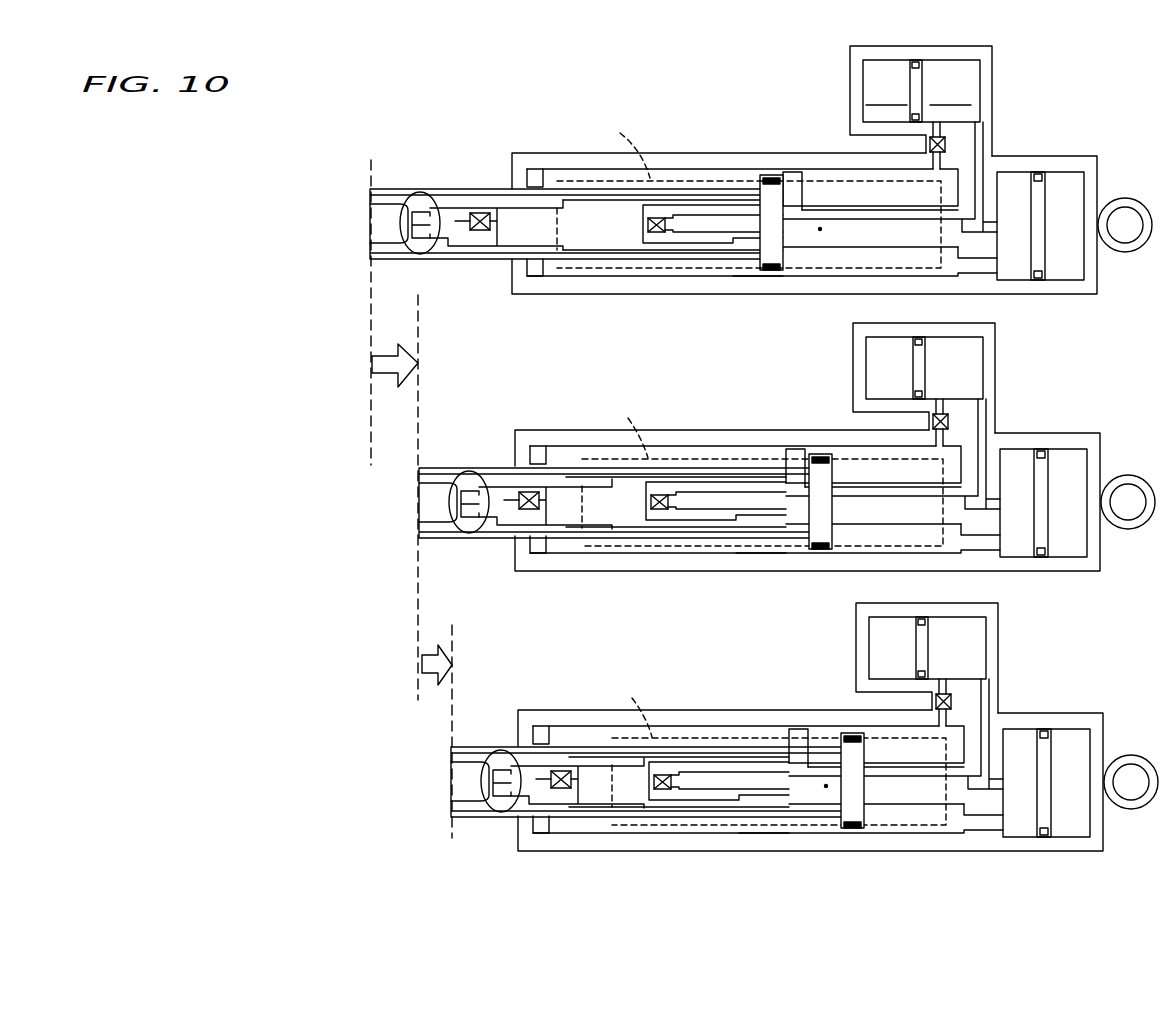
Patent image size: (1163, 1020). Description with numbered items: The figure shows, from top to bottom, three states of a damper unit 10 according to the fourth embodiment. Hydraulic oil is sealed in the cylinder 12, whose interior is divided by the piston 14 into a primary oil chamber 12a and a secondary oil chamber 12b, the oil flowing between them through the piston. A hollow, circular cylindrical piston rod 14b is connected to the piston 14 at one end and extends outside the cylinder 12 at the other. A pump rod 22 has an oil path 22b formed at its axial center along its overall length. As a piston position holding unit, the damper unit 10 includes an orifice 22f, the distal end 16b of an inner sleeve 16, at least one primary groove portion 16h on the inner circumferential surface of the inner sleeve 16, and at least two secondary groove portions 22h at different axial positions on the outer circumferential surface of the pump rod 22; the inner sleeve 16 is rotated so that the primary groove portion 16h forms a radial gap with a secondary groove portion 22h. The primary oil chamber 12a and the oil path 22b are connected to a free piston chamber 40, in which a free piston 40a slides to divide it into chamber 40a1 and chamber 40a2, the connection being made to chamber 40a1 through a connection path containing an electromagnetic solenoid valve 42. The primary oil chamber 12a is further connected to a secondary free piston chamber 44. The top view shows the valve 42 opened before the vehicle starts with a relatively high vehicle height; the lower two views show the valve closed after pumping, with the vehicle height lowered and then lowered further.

The damper unit 10 is at (686, 104).
The cylinder 12 is at (699, 154).
The primary oil chamber 12a is at (794, 188).
The secondary oil chamber 12b is at (546, 178).
The piston 14 is at (504, 182).
The piston rod 14b is at (437, 205).
The inner sleeve 16 is at (488, 198).
The distal end of inner sleeve 16b is at (784, 272).
The primary groove portion 16h is at (584, 204).
The pump rod 22 is at (868, 258).
The oil path 22b is at (743, 300).
The orifice 22f is at (822, 231).
The secondary groove portions 22h is at (884, 212).
The free piston chamber 40 is at (996, 103).
The free piston 40a is at (920, 62).
The chamber 40a1 is at (957, 94).
The chamber 40a2 is at (893, 94).
The electromagnetic solenoid valve 42 is at (928, 145).
The secondary free piston chamber 44 is at (1049, 156).